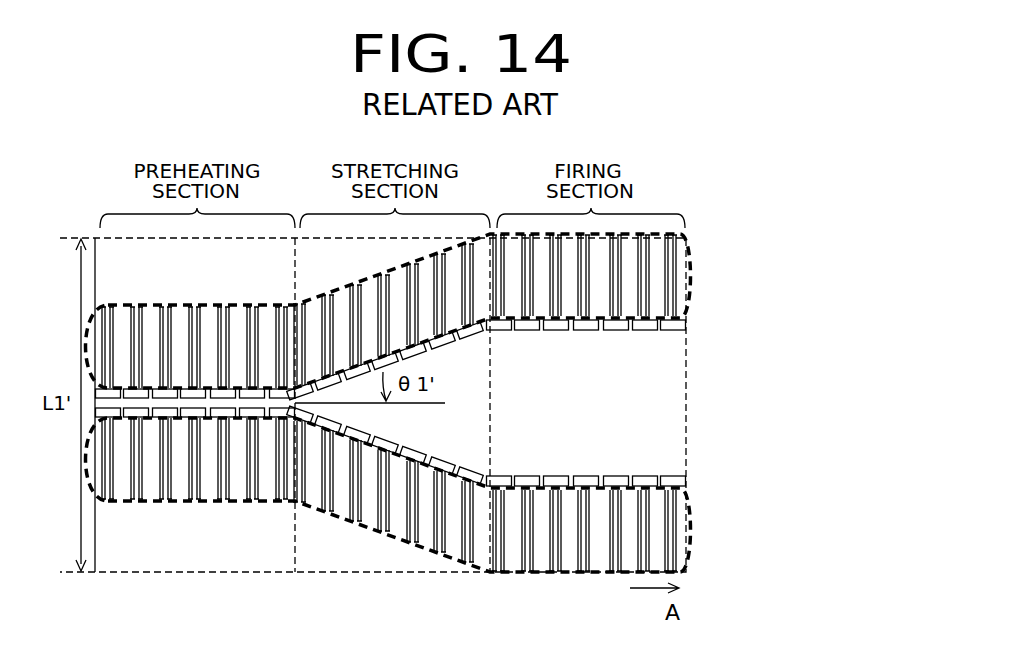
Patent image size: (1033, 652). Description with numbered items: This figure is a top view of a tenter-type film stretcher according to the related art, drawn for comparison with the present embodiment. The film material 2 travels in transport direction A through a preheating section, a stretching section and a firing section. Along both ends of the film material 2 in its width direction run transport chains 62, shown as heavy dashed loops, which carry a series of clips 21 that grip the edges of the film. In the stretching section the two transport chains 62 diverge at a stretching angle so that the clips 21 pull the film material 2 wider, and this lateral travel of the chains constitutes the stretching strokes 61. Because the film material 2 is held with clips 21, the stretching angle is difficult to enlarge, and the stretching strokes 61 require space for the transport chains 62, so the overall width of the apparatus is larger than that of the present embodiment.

The film material 2 is at (664, 408).
The clips 21 is at (686, 325).
The stretching strokes 61 is at (683, 282).
The transport chains 62 is at (693, 267).